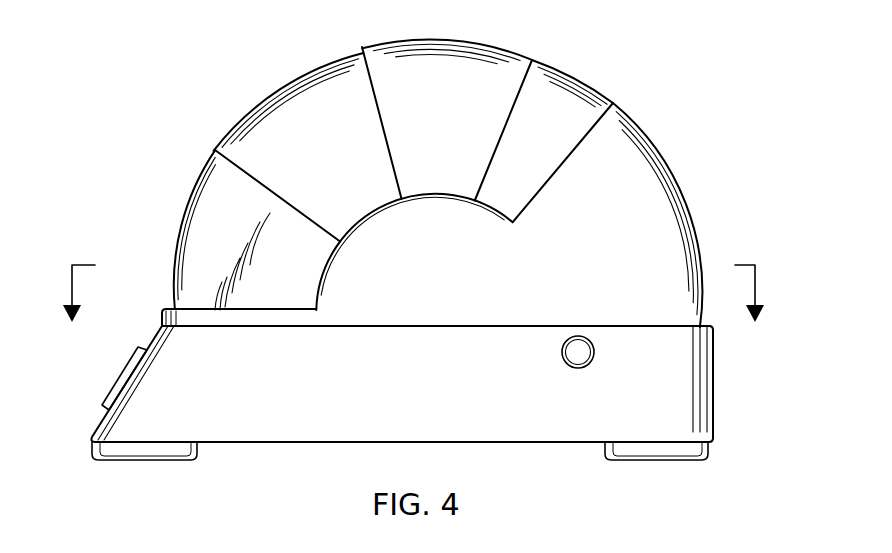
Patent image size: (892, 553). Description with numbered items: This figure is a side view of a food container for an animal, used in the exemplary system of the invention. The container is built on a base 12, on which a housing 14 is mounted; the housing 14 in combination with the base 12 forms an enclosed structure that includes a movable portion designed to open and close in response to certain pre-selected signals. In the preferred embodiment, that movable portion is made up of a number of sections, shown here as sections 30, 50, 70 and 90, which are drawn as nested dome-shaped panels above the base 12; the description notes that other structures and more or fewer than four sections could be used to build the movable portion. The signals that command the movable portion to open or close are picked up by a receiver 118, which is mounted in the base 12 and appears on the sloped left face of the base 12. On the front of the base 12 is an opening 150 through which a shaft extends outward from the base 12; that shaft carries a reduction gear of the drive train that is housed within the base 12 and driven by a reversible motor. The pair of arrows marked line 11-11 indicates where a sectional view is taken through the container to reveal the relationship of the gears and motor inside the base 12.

The base 12 is at (673, 403).
The housing 14 is at (667, 165).
The section 30 is at (190, 207).
The section 50 is at (288, 85).
The section 70 is at (475, 48).
The section 90 is at (577, 80).
The receiver 118 is at (118, 382).
The opening 150 is at (578, 368).
The line 11- 11 is at (417, 293).